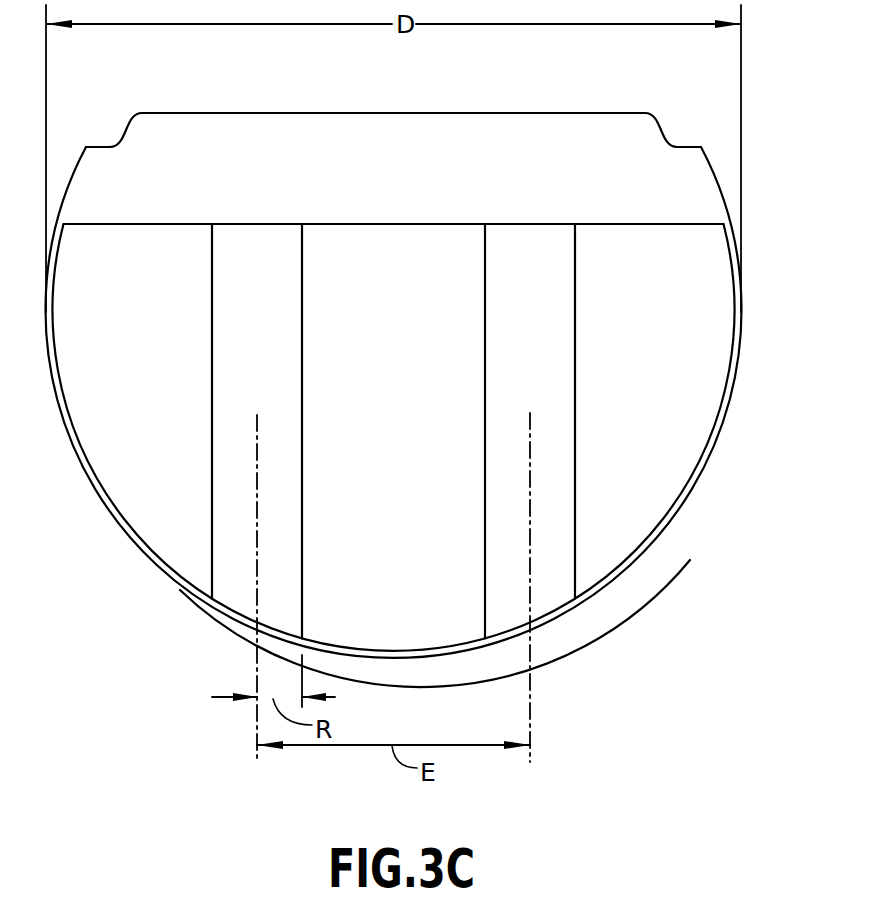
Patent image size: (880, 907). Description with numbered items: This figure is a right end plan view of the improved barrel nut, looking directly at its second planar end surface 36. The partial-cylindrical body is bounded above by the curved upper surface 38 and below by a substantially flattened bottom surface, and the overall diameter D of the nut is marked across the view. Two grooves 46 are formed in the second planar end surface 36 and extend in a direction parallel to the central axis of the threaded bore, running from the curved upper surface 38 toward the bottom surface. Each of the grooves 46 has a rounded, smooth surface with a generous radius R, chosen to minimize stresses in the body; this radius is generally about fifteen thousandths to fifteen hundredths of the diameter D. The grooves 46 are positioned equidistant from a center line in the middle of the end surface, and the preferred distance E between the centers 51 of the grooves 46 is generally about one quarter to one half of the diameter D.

The second planar end surface 36 is at (670, 418).
The curved upper surface 38 is at (663, 532).
The grooves 46 is at (236, 597).
The center 51 is at (257, 468).